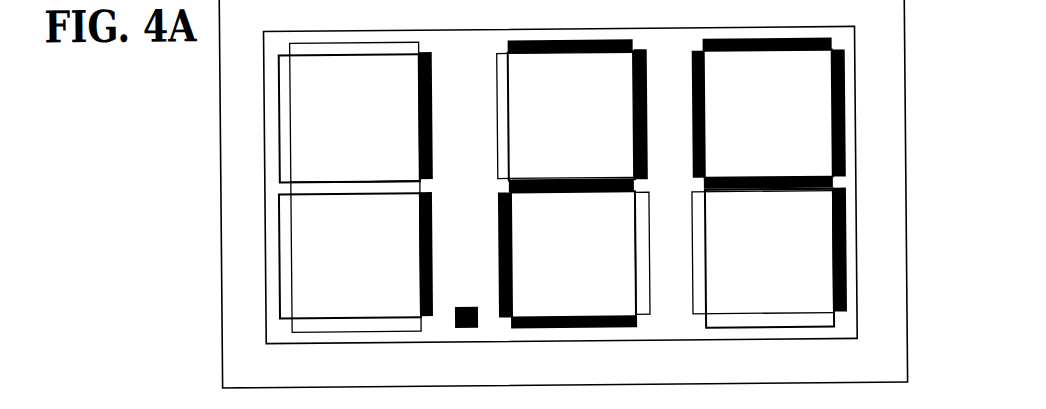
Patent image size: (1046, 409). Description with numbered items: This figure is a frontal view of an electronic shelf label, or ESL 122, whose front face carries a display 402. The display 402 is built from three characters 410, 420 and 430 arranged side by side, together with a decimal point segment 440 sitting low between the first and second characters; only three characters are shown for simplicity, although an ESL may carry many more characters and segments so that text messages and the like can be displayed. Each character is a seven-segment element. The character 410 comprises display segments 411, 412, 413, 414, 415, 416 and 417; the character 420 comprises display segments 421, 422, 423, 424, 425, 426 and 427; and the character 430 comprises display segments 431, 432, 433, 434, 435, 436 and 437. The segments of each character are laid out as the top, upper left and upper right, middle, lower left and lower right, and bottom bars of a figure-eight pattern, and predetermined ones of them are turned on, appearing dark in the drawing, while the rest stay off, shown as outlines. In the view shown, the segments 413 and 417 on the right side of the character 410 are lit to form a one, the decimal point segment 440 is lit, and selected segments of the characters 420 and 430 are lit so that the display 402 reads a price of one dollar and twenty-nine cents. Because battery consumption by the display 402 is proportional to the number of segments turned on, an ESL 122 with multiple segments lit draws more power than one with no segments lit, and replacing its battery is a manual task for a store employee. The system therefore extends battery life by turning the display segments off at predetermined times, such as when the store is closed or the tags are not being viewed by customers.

The ESL 122 is at (222, 369).
The display 402 is at (267, 329).
The character 410 is at (373, 125).
The display segment 411 is at (352, 41).
The display segment 412 is at (284, 116).
The display segment 413 is at (434, 75).
The display segment 414 is at (381, 185).
The display segment 415 is at (283, 252).
The display segment 416 is at (356, 323).
The display segment 417 is at (434, 211).
The character 420 is at (590, 125).
The display segment 421 is at (566, 40).
The display segment 422 is at (506, 139).
The display segment 423 is at (634, 75).
The display segment 424 is at (595, 192).
The display segment 425 is at (499, 272).
The display segment 426 is at (586, 330).
The display segment 427 is at (642, 287).
The character 430 is at (788, 125).
The display segment 431 is at (764, 39).
The display segment 432 is at (706, 73).
The display segment 433 is at (833, 154).
The display segment 434 is at (788, 192).
The display segment 435 is at (702, 255).
The display segment 436 is at (771, 322).
The display segment 437 is at (832, 289).
The decimal point segment 440 is at (467, 329).